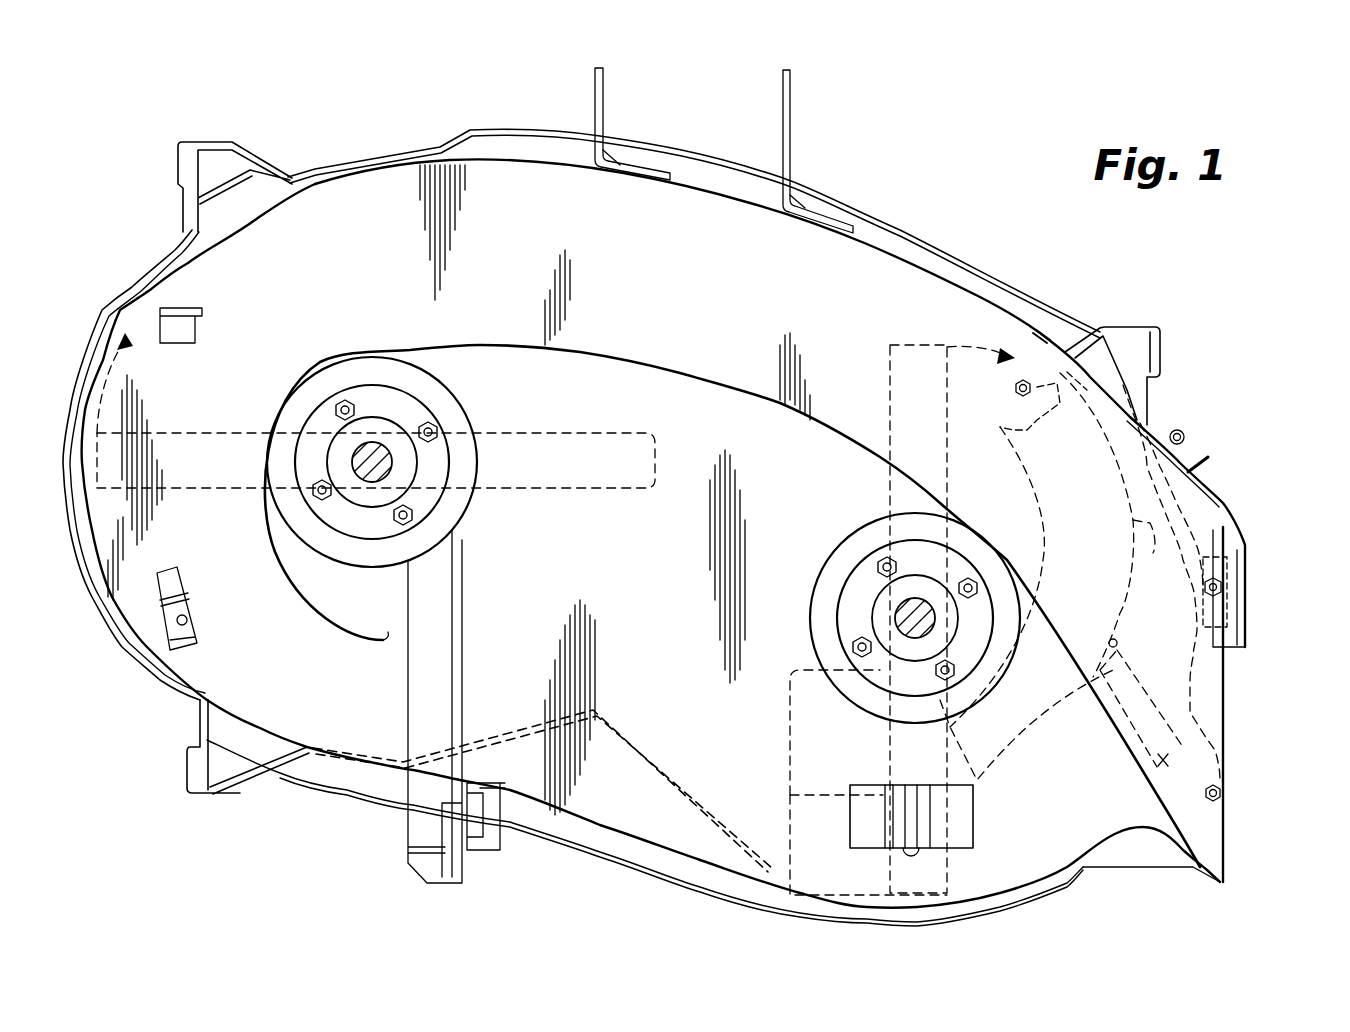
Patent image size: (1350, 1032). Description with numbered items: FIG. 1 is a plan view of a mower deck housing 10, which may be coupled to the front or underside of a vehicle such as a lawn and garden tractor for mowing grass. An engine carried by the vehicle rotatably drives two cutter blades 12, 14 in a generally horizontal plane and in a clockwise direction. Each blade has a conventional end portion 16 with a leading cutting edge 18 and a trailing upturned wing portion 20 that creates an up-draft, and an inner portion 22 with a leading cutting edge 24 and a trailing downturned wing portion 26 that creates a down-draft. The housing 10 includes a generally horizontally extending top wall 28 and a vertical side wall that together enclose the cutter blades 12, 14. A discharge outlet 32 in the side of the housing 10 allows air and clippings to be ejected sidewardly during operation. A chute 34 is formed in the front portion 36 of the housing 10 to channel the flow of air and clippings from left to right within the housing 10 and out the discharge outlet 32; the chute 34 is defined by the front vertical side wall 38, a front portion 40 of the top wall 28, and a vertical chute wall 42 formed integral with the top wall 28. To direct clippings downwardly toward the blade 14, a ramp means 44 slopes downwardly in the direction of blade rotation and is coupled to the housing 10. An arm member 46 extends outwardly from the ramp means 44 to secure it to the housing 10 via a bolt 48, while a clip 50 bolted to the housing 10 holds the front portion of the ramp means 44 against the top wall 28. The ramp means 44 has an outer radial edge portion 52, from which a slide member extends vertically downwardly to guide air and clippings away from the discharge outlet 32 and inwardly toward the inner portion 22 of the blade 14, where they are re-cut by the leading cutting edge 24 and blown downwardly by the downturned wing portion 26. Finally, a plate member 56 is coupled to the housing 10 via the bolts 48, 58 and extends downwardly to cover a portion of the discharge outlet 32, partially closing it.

The mower deck housing 10 is at (881, 203).
The cutter blade 12 is at (884, 345).
The cutter blade 14 is at (603, 490).
The end portion 16 is at (792, 800).
The leading cutting edge 18 is at (885, 873).
The trailing upturned wing portion 20 is at (947, 870).
The inner portion 22 is at (792, 797).
The leading cutting edge 24 is at (885, 745).
The trailing downturned wing portion 26 is at (947, 745).
The top wall 28 is at (697, 235).
The discharge outlet 32 is at (1256, 684).
The chute 34 is at (517, 157).
The front portion 36 is at (818, 242).
The front vertical side wall 38 is at (897, 253).
The front portion of top wall 40 is at (912, 280).
The vertical chute wall 42 is at (687, 378).
The ramp means 44 is at (1062, 490).
The arm member 46 is at (1176, 681).
The bolt 48 is at (1222, 793).
The clip 50 is at (1013, 397).
The outer radial edge portion 52 is at (1135, 528).
The plate member 56 is at (1197, 660).
The bolt 58 is at (1222, 587).